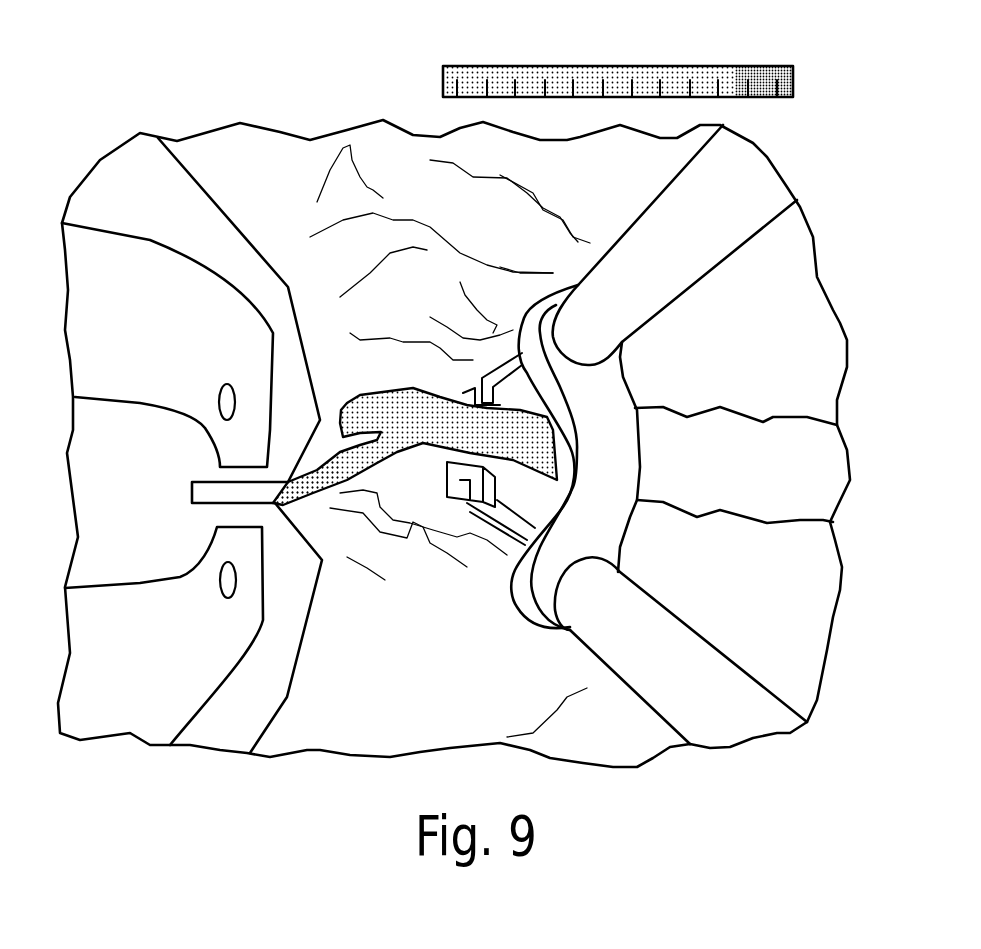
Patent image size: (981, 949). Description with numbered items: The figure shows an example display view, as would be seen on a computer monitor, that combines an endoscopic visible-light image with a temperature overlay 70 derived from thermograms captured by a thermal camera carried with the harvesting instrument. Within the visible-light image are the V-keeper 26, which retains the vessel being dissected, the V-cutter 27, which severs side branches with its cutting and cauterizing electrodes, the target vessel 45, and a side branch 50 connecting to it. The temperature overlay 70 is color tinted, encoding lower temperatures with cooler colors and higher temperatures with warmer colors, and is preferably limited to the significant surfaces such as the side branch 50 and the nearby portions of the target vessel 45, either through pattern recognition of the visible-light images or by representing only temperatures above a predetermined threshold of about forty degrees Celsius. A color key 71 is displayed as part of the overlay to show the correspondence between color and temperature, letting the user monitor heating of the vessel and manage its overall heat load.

The vessel cutter (V-cutter) 27 is at (98, 205).
The color key 71 is at (703, 66).
The temperature overlay 70 is at (380, 453).
The side branch 50 is at (297, 507).
The vessel keeper (V-keeper) 26 is at (628, 362).
The target vessel 45 is at (807, 470).